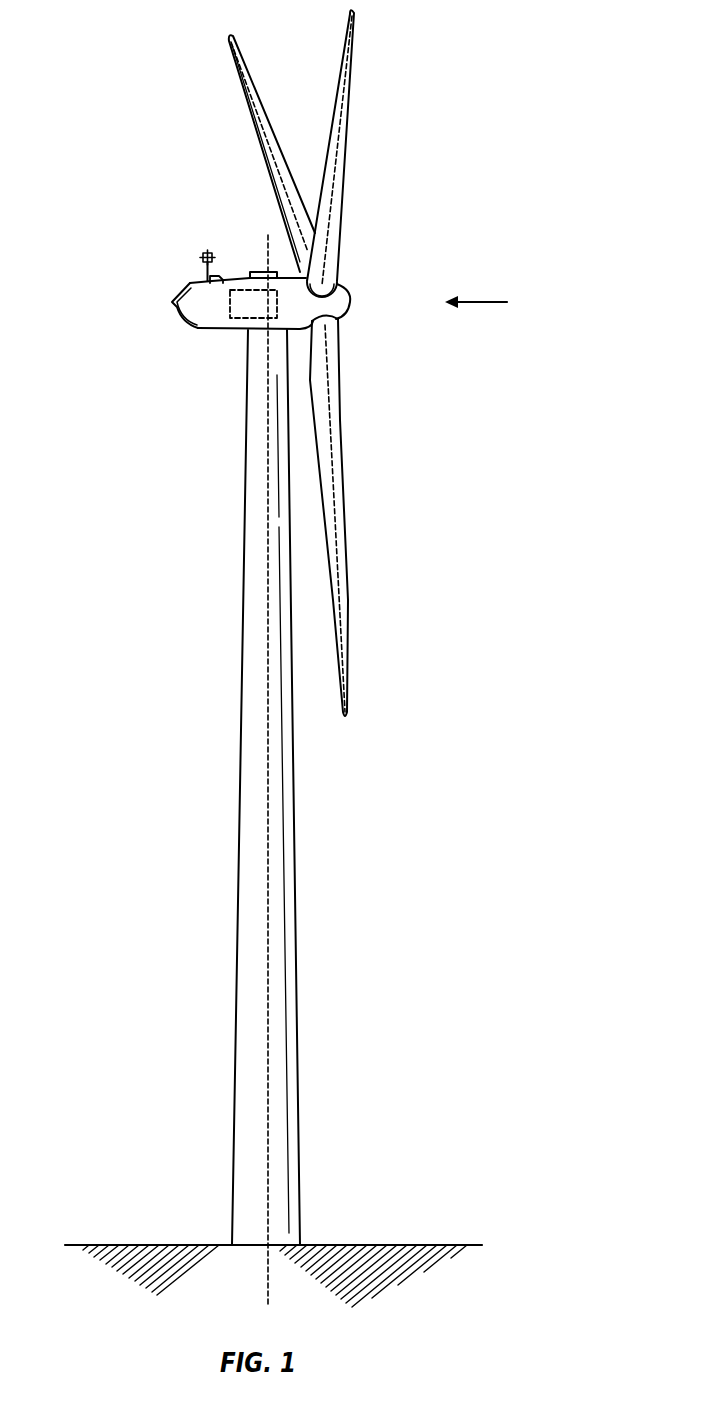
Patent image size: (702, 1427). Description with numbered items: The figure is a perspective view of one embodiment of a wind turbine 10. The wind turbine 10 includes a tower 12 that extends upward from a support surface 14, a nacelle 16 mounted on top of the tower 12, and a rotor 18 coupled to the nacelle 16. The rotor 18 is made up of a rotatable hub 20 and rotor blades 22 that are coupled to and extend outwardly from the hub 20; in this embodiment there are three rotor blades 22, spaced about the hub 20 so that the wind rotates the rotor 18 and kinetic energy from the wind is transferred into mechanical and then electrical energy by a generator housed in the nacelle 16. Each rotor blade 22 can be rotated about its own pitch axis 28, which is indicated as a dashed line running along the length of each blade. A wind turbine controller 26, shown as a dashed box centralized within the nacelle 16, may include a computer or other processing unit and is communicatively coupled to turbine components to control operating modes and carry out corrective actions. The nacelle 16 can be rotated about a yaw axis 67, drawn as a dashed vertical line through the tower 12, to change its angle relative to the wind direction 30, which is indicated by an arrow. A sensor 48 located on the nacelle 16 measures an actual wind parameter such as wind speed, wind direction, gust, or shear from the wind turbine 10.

The wind turbine 10 is at (458, 102).
The tower 12 is at (250, 910).
The support surface 14 is at (149, 1243).
The nacelle 16 is at (222, 333).
The rotor 18 is at (358, 272).
The rotatable hub 20 is at (347, 307).
The rotor blade 22 is at (337, 140).
The wind turbine controller 26 is at (240, 272).
The pitch axis 28 is at (267, 155).
The wind direction 30 is at (492, 303).
The sensor 48 is at (203, 257).
The yaw axis 67 is at (267, 448).